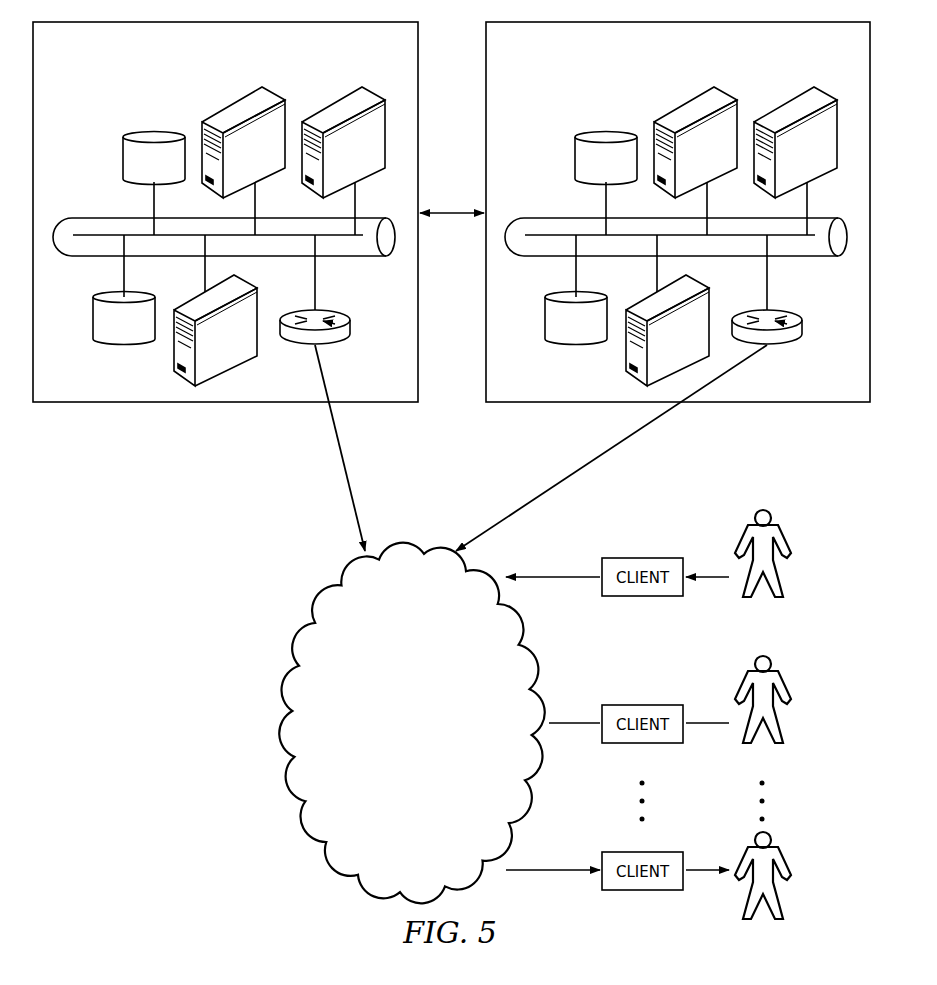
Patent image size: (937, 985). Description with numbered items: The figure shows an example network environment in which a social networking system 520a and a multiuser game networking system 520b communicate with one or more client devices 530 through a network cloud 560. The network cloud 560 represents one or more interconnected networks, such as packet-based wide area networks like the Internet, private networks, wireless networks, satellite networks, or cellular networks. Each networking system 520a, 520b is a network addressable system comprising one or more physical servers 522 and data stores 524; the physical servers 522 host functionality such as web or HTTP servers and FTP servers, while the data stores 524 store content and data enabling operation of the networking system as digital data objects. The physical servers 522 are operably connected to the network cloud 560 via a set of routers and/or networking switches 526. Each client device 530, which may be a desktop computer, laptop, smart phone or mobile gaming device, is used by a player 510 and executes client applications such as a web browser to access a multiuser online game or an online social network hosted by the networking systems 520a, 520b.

The player 510 is at (790, 577).
The social networking system 520a is at (126, 405).
The multiuser game networking system 520b is at (774, 405).
The physical server 522 is at (235, 111).
The data store 524 is at (122, 157).
The routers and/or networking switches 526 is at (346, 314).
The client device 530 is at (642, 557).
The network cloud 560 is at (398, 748).